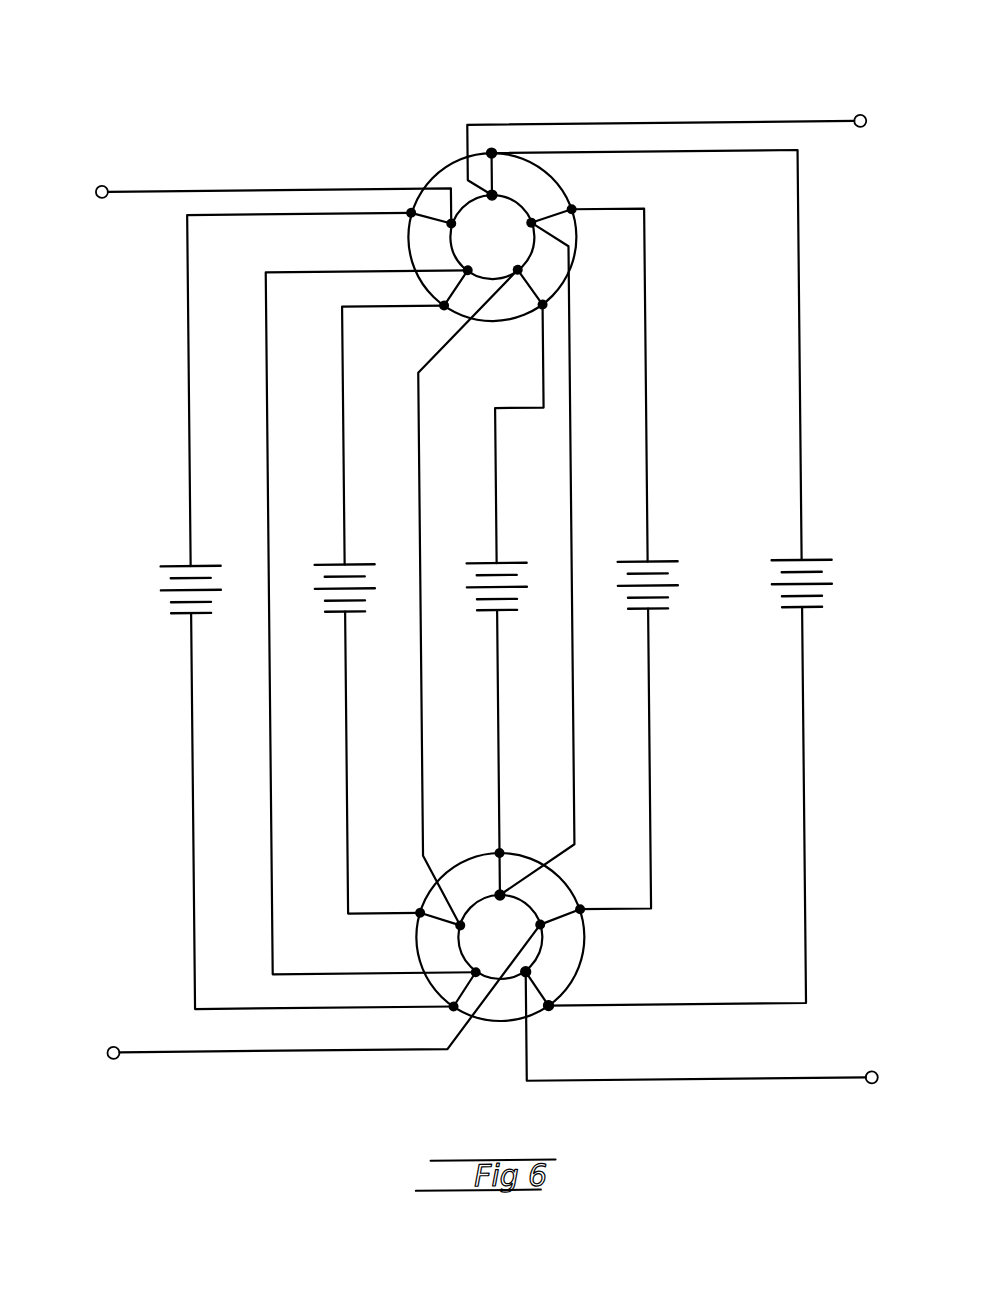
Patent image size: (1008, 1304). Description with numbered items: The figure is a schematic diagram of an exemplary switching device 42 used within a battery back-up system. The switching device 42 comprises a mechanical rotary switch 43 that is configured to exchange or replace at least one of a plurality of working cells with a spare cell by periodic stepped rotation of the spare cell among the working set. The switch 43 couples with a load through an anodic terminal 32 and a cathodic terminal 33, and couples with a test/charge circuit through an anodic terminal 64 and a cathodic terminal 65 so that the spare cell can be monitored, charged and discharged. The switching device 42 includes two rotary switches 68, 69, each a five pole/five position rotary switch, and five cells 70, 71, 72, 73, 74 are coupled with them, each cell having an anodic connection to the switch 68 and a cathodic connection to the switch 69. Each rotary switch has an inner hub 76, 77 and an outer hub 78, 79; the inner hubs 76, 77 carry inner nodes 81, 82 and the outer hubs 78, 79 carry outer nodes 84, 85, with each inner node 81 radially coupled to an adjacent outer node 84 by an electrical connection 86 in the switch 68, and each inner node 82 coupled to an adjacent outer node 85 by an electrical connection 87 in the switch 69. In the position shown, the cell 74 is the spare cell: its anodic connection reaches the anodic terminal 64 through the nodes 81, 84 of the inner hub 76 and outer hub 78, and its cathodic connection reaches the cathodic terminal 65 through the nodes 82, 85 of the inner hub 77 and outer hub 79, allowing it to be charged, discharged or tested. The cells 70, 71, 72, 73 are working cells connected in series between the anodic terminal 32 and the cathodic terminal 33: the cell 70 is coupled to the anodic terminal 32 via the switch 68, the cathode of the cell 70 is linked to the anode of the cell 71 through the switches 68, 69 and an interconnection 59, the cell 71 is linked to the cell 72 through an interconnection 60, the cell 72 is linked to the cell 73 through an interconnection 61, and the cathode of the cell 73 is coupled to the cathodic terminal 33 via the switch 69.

The switching device 42 is at (290, 71).
The mechanical rotary switch 43 is at (136, 820).
The anodic terminal 32 is at (236, 187).
The cathodic terminal 33 is at (238, 1050).
The anodic terminal 64 is at (732, 124).
The cathodic terminal 65 is at (740, 1084).
The rotary switch 68 is at (517, 203).
The rotary switch 69 is at (511, 954).
The cell 70 is at (174, 563).
The cell 71 is at (326, 563).
The cell 72 is at (481, 562).
The cell 73 is at (633, 561).
The cell 74 is at (786, 562).
The interconnection 59 is at (268, 770).
The interconnection 60 is at (420, 770).
The interconnection 61 is at (573, 770).
The inner hub 76 is at (472, 197).
The inner hub 77 is at (455, 945).
The outer hub 78 is at (581, 232).
The outer hub 79 is at (582, 949).
The inner node 81 is at (496, 199).
The inner node 82 is at (514, 963).
The outer node 84 is at (494, 152).
The outer node 85 is at (546, 1012).
The electrical connection 86 is at (497, 176).
The electrical connection 87 is at (539, 985).